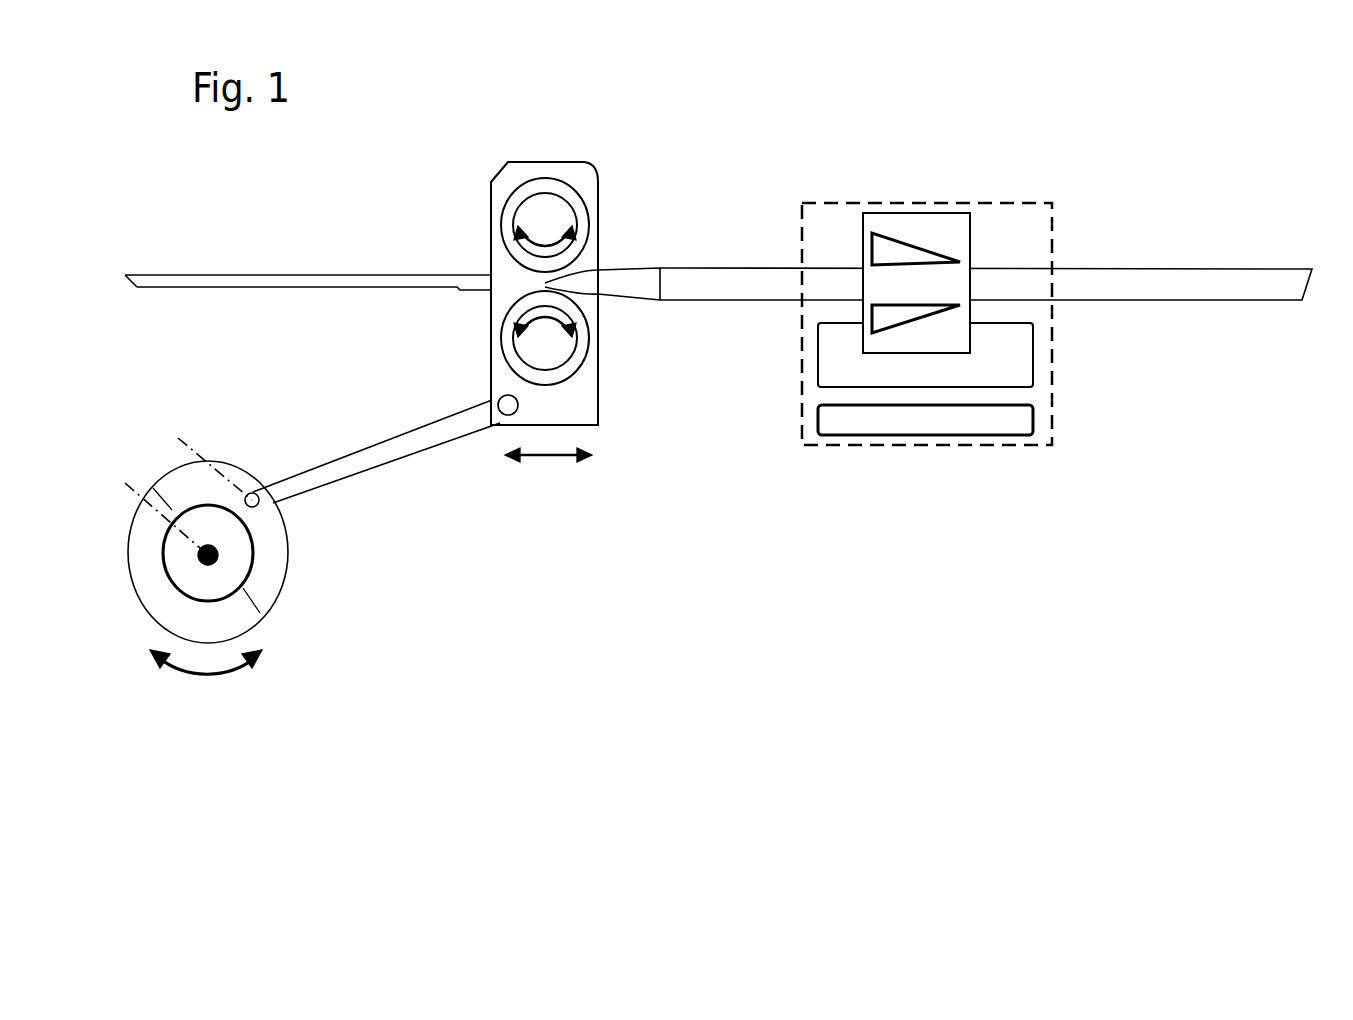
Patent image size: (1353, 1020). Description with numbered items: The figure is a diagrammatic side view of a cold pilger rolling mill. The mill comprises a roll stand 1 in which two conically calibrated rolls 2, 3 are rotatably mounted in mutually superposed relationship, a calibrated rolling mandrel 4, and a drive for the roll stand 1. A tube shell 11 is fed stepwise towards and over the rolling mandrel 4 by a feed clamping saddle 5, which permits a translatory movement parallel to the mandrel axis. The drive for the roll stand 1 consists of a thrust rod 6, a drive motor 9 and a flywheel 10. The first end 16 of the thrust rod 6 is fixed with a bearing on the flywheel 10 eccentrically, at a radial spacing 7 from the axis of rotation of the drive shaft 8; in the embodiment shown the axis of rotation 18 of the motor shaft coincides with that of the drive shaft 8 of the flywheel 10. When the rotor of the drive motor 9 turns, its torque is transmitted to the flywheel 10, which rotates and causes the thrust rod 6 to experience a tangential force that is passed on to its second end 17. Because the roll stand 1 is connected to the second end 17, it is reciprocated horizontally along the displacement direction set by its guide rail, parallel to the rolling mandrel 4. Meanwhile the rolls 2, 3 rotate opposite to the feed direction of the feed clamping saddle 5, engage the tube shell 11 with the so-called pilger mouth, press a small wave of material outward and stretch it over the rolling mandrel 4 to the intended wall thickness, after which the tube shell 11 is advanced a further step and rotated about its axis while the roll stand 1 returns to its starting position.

The roll stand 1 is at (587, 403).
The roll 2 is at (545, 218).
The roll 3 is at (545, 358).
The rolling mandrel 4 is at (630, 290).
The feed clamping saddle 5 is at (1023, 252).
The thrust rod 6 is at (380, 457).
The radial spacing 7 is at (157, 441).
The drive shaft 8 is at (208, 555).
The drive motor 9 is at (238, 543).
The flywheel 10 is at (273, 587).
The tube shell 11 is at (730, 283).
The first end 16 is at (256, 495).
The second end 17 is at (500, 402).
The axis of rotation 18 is at (208, 555).